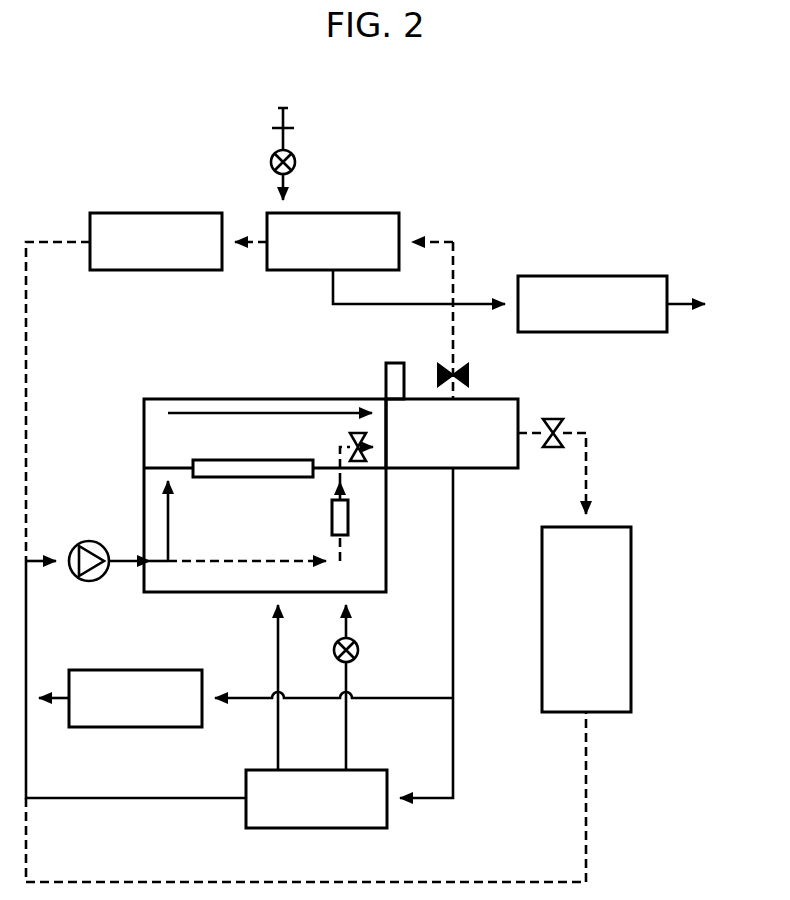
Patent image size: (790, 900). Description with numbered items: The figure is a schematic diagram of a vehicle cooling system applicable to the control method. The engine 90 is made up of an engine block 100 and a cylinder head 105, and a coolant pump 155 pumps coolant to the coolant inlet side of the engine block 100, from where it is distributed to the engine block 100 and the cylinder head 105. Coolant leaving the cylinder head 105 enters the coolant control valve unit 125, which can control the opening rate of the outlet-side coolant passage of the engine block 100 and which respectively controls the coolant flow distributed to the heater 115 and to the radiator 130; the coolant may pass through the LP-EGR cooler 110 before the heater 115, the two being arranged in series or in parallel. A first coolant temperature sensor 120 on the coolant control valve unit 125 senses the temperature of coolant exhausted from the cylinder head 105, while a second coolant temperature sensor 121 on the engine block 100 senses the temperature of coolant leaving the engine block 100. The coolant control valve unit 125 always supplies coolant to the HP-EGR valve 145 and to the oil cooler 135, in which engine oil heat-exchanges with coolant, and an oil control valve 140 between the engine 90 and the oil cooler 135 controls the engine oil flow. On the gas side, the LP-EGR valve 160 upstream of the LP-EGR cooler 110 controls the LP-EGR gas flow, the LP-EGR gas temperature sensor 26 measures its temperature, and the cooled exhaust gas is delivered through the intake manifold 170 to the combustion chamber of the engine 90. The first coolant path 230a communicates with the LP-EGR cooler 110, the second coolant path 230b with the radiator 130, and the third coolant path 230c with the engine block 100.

The LP-EGR gas temperature sensor 26 is at (294, 128).
The engine 90 is at (126, 450).
The engine block 100 is at (224, 594).
The cylinder head 105 is at (163, 399).
The LP-EGR cooler 110 is at (379, 213).
The heater 115 is at (155, 213).
The first coolant temperature sensor 120 is at (386, 380).
The second coolant temperature sensor 121 is at (348, 530).
The coolant control valve unit 125 is at (494, 482).
The radiator 130 is at (632, 620).
The oil cooler 135 is at (246, 814).
The oil control valve 140 is at (359, 650).
The HP-EGR valve 145 is at (135, 670).
The coolant pump 155 is at (88, 541).
The LP-EGR valve 160 is at (296, 162).
The intake manifold 170 is at (592, 276).
The first coolant path 230a is at (470, 375).
The second coolant path 230b is at (553, 418).
The third coolant path 230c is at (358, 462).